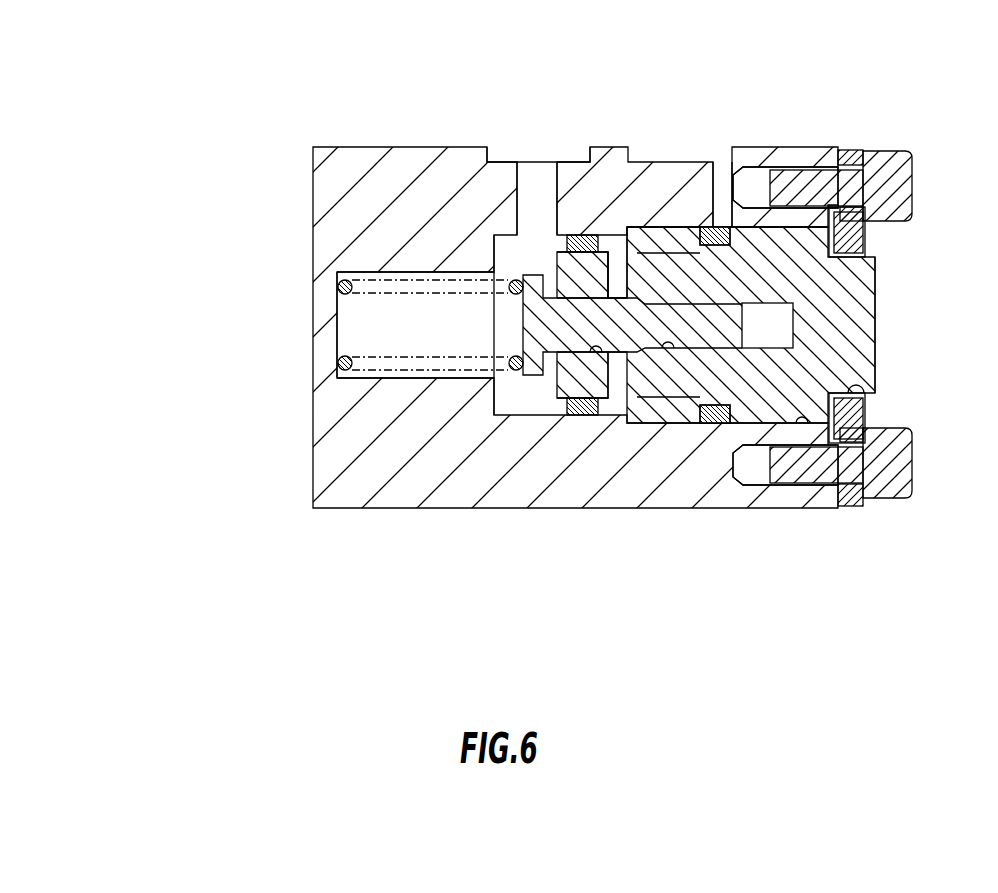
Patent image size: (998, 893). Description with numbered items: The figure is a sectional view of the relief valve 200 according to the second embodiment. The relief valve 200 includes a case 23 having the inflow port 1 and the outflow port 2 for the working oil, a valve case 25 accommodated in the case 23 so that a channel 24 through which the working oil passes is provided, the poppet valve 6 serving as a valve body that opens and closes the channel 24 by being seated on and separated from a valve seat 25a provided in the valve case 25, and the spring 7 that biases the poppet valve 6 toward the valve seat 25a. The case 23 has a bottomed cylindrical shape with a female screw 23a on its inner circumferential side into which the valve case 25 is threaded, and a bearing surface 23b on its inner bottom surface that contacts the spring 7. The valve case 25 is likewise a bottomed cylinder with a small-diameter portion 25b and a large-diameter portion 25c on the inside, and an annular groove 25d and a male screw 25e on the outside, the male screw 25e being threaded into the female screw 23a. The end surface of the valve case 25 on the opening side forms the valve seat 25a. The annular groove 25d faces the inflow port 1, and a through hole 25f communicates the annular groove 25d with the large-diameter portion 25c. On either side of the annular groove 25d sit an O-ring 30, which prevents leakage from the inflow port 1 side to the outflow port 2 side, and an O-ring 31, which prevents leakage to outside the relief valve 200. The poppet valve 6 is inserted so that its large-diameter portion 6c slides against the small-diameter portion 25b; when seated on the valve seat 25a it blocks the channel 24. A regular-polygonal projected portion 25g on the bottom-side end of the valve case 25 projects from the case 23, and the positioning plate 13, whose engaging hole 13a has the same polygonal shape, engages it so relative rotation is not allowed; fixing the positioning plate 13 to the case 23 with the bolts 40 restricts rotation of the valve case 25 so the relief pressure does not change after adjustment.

The relief valve 200 is at (256, 121).
The inflow port 1 is at (657, 228).
The outflow port 2 is at (534, 172).
The poppet valve 6 is at (570, 418).
The large-diameter portion 6c is at (729, 424).
The spring 7 is at (509, 366).
The positioning plate 13 is at (864, 243).
The engaging hole 13a is at (851, 384).
The case 23 is at (322, 509).
The female screw 23a is at (813, 432).
The bearing surface 23b is at (343, 347).
The channel 24 is at (606, 288).
The valve case 25 is at (688, 424).
The valve seat 25a is at (553, 356).
The small-diameter portion 25b is at (668, 345).
The large-diameter portion 25c is at (597, 400).
The annular groove 25d is at (684, 168).
The male screw 25e is at (787, 208).
The through hole 25f is at (624, 272).
The projected portion 25g is at (876, 316).
The O-ring 30 is at (579, 233).
The O-ring 31 is at (718, 227).
The bolts 40 is at (885, 152).